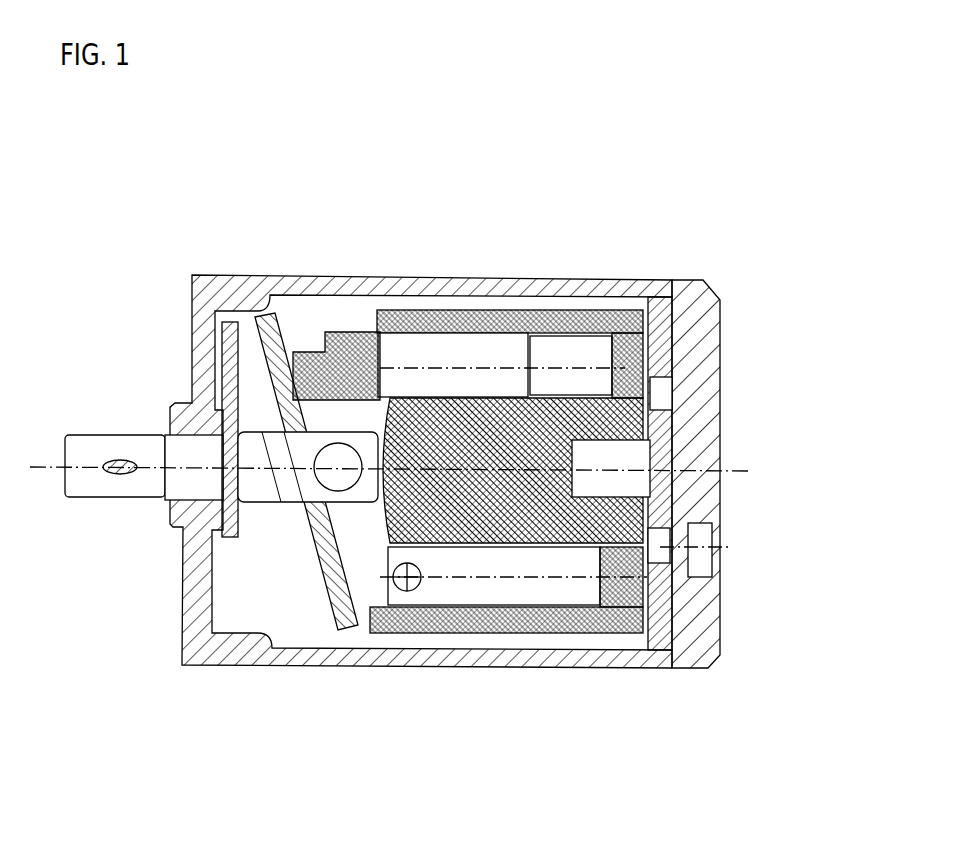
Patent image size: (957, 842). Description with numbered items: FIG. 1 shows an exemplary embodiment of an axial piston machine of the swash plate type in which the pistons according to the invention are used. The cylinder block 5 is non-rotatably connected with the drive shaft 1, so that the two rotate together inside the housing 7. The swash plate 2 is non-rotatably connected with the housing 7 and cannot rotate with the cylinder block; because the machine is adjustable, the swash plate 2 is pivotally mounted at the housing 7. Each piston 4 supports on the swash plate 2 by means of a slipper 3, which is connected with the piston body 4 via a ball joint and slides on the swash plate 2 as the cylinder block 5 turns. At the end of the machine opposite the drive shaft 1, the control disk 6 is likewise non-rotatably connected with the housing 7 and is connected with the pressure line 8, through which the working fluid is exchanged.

The drive shaft 1 is at (113, 436).
The swash plate 2 is at (270, 313).
The slipper 3 is at (305, 372).
The piston 4 is at (520, 316).
The cylinder block 5 is at (632, 306).
The control disk 6 is at (684, 305).
The housing 7 is at (722, 318).
The pressure line 8 is at (697, 552).